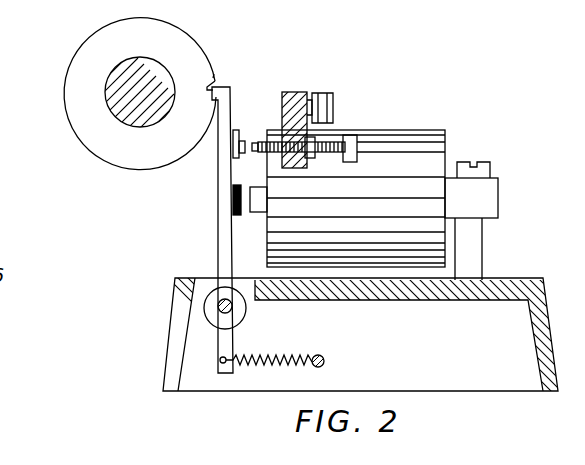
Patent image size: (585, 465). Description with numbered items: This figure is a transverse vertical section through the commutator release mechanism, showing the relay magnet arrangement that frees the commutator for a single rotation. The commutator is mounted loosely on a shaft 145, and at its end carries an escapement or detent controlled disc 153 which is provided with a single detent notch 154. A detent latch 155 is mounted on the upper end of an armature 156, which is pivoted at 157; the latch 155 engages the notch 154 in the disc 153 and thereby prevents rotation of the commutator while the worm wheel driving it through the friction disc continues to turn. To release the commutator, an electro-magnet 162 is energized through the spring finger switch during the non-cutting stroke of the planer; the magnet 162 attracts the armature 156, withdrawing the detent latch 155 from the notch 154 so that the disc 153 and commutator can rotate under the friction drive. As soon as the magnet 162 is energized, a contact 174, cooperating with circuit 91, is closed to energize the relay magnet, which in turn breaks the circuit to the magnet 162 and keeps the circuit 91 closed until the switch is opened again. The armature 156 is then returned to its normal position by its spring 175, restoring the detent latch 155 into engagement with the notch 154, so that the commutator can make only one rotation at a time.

The escapement or detent controlled disc 153 is at (188, 47).
The shaft 145 is at (122, 112).
The detent notch 154 is at (213, 74).
The detent latch 155 is at (229, 108).
The armature 156 is at (228, 213).
The contact 174 is at (240, 170).
The circuit 91 is at (255, 157).
The electro-magnet 162 is at (398, 142).
The pivot 157 is at (233, 303).
The spring 175 is at (273, 363).